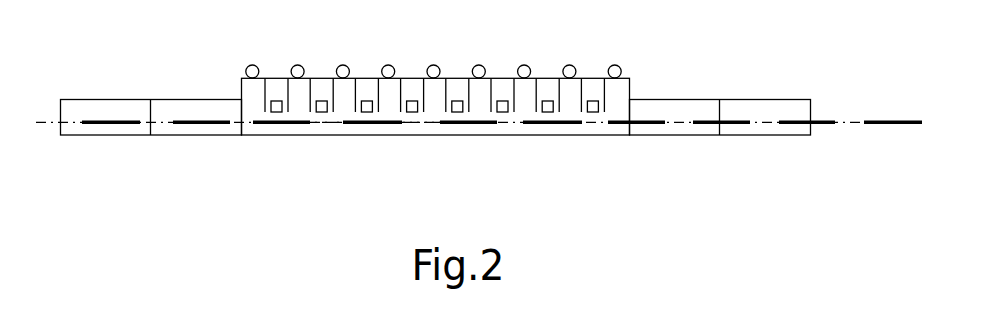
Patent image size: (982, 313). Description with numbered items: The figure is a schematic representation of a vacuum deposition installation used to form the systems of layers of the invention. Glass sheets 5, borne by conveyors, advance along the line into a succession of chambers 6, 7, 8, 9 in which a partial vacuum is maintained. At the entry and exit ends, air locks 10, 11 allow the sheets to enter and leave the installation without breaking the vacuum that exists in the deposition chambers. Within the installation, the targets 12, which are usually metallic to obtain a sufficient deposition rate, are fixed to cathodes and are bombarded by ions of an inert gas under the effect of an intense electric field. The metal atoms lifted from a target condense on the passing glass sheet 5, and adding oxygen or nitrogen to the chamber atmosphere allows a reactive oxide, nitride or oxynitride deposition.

The glass sheets 5 is at (133, 120).
The chamber 6 is at (277, 123).
The chamber 7 is at (321, 123).
The chamber 8 is at (366, 123).
The chamber 9 is at (411, 123).
The air lock 10 is at (193, 137).
The air lock 11 is at (683, 137).
The targets 12 is at (276, 101).